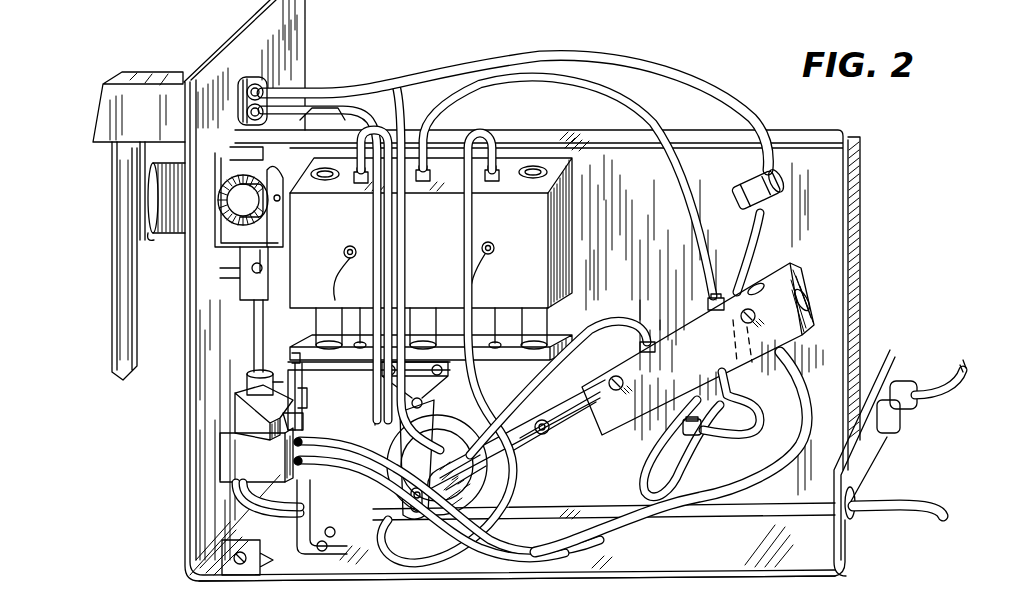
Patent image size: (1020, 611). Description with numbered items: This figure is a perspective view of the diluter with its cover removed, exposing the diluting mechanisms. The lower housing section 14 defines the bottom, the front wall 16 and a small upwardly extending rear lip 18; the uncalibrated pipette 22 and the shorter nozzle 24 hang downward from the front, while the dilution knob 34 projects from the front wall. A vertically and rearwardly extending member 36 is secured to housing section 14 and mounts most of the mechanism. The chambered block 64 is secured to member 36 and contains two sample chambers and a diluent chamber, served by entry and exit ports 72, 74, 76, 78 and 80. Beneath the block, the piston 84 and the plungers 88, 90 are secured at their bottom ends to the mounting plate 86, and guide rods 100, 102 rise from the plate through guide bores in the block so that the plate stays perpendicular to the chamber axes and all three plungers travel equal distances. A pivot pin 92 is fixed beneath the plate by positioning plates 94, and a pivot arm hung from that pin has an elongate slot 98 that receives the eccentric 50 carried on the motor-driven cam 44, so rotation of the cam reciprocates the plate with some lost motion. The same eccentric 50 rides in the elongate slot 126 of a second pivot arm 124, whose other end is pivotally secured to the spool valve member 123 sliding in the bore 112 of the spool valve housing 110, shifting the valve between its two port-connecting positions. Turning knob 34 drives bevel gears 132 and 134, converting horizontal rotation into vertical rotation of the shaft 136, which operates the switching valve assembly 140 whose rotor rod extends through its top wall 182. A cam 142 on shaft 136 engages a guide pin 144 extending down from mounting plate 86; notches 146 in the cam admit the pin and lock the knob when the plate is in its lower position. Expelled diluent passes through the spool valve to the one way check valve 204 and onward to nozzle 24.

The housing section 14 is at (412, 580).
The front wall 16 is at (185, 440).
The rear lip 18 is at (862, 461).
The pipette 22 is at (110, 265).
The nozzle 24 is at (150, 240).
The dilution knob 34 is at (170, 163).
The member 36 is at (822, 132).
The cam 44 is at (455, 428).
The eccentric 50 is at (392, 546).
The chambered block 64 is at (572, 222).
The entry and exit port 72 is at (346, 252).
The entry and exit port 74 is at (358, 186).
The entry and exit port 76 is at (494, 246).
The entry and exit port 78 is at (500, 184).
The entry and exit port 80 is at (420, 183).
The piston 84 is at (423, 315).
The mounting plate 86 is at (565, 333).
The plunger 88 is at (353, 317).
The plunger 90 is at (498, 315).
The pivot pin 92 is at (412, 405).
The positioning plates 94 is at (445, 378).
The elongate slot 98 is at (470, 527).
The guide rod 100 is at (320, 325).
The guide rod 102 is at (560, 318).
The spool valve housing 110 is at (808, 303).
The bore 112 is at (800, 270).
The spool valve member 123 is at (590, 430).
The pivot arm 124 is at (515, 447).
The elongate slot 126 is at (490, 480).
The bevel gear 132 is at (232, 175).
The bevel gear 134 is at (272, 170).
The shaft 136 is at (254, 325).
The switching valve assembly 140 is at (225, 460).
The cam 142 is at (246, 380).
The guide pin 144 is at (305, 385).
The notches 146 is at (306, 414).
The top wall 182 is at (236, 408).
The one way check valve 204 is at (742, 182).